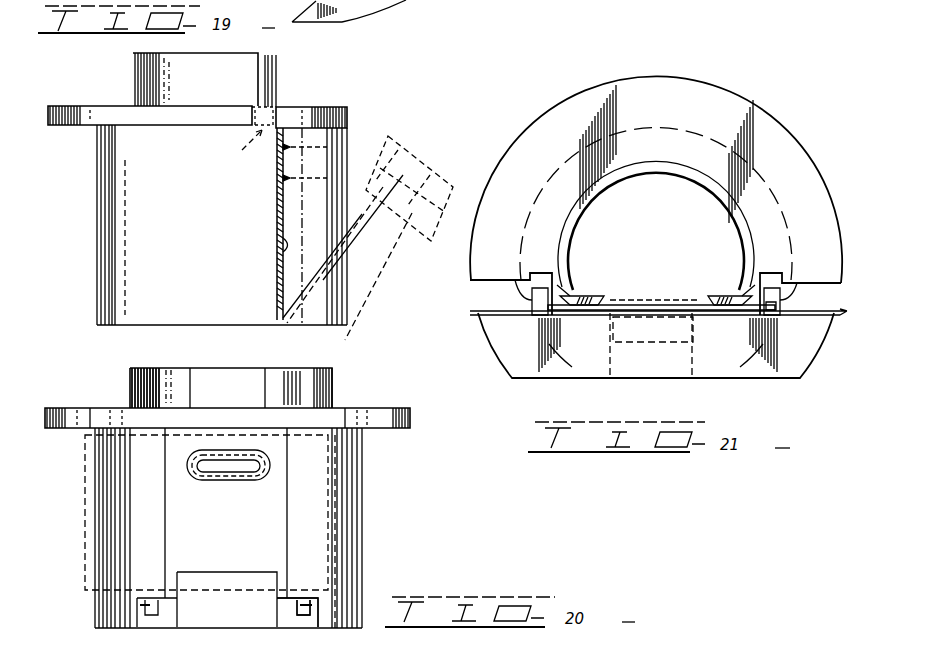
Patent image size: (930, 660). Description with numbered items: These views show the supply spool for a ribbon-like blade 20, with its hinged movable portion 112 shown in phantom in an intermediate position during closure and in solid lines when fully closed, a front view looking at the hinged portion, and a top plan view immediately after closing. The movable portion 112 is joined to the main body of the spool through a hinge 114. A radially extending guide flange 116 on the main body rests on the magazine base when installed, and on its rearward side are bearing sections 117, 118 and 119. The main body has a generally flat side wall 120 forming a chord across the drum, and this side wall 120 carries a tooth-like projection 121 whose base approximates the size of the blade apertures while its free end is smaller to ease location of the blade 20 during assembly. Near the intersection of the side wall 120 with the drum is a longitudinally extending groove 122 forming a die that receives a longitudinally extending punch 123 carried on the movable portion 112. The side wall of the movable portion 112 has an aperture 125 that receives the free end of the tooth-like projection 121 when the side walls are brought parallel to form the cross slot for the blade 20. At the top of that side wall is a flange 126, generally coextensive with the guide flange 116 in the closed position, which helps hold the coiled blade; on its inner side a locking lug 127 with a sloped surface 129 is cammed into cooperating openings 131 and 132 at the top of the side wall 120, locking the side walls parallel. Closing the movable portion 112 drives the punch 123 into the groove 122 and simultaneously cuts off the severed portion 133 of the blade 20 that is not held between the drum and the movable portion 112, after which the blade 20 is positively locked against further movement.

In FIG. 19, the ribbon-like blade 20 is at (278, 200).
In FIG. 19, the movable portion 112 is at (345, 140).
In FIG. 20, the hinge 114 is at (300, 622).
In FIG. 19, the guide flange 116 is at (64, 110).
In FIG. 20, the guide flange 116 is at (392, 412).
In FIG. 21, the guide flange 116 is at (728, 98).
In FIG. 19, the bearing section 117 is at (205, 62).
In FIG. 20, the bearing section 117 is at (223, 380).
In FIG. 21, the bearing section 117 is at (650, 167).
In FIG. 19, the bearing section 118 is at (278, 68).
In FIG. 20, the bearing section 118 is at (159, 380).
In FIG. 21, the bearing section 118 is at (588, 292).
In FIG. 20, the bearing section 119 is at (294, 382).
In FIG. 21, the bearing section 119 is at (712, 297).
In FIG. 19, the side wall 120 is at (280, 242).
In FIG. 21, the side wall 120 is at (602, 305).
In FIG. 19, the tooth-like projection 121 is at (390, 138).
In FIG. 20, the tooth-like projection 121 is at (226, 472).
In FIG. 21, the tooth-like projection 121 is at (648, 365).
In FIG. 21, the groove 122 is at (781, 300).
In FIG. 21, the punch 123 is at (770, 315).
In FIG. 20, the aperture 125 is at (255, 476).
In FIG. 19, the flange 126 is at (333, 110).
In FIG. 20, the flange 126 is at (325, 417).
In FIG. 19, the locking lug 127 is at (270, 112).
In FIG. 21, the locking lug 127 is at (535, 298).
In FIG. 19, the sloped surface 129 is at (238, 148).
In FIG. 21, the opening 131 is at (528, 273).
In FIG. 21, the opening 132 is at (776, 283).
In FIG. 21, the severed portion 133 is at (845, 318).